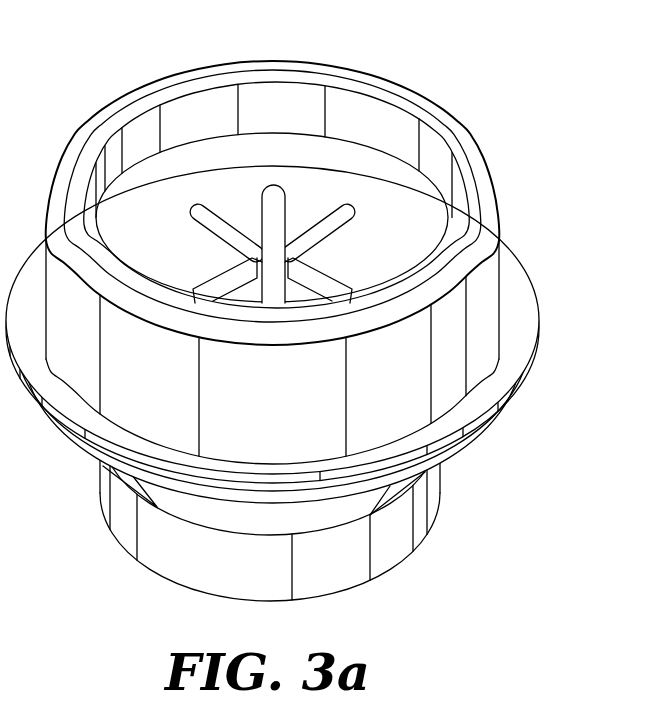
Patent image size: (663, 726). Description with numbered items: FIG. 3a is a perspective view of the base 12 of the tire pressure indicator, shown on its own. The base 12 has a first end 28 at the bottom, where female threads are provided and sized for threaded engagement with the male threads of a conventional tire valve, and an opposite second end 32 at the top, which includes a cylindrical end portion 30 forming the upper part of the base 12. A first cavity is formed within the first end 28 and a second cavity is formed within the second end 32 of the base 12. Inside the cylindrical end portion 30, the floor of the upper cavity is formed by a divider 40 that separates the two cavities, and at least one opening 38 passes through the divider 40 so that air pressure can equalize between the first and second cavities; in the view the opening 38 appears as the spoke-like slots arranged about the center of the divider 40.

The base 12 is at (446, 110).
The first end 28 is at (462, 514).
The cylindrical end portion 30 is at (287, 415).
The second end 32 is at (508, 157).
The opening 38 is at (268, 258).
The divider 40 is at (330, 172).